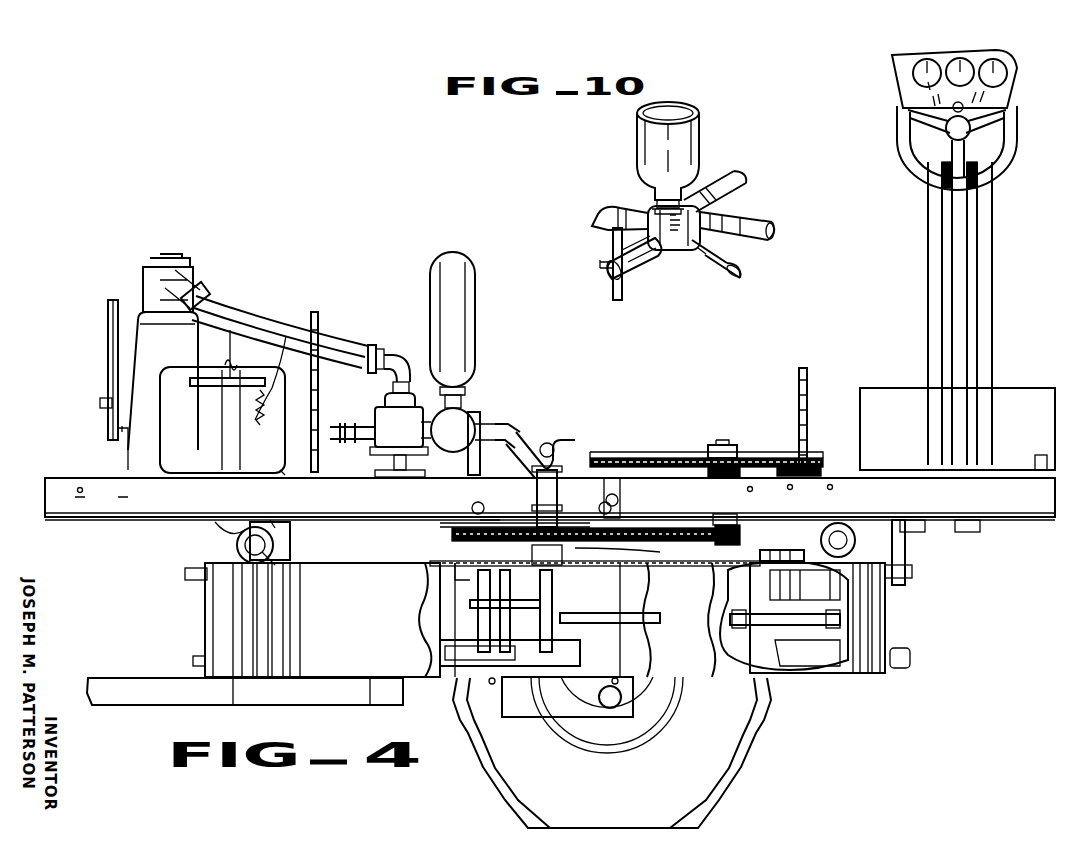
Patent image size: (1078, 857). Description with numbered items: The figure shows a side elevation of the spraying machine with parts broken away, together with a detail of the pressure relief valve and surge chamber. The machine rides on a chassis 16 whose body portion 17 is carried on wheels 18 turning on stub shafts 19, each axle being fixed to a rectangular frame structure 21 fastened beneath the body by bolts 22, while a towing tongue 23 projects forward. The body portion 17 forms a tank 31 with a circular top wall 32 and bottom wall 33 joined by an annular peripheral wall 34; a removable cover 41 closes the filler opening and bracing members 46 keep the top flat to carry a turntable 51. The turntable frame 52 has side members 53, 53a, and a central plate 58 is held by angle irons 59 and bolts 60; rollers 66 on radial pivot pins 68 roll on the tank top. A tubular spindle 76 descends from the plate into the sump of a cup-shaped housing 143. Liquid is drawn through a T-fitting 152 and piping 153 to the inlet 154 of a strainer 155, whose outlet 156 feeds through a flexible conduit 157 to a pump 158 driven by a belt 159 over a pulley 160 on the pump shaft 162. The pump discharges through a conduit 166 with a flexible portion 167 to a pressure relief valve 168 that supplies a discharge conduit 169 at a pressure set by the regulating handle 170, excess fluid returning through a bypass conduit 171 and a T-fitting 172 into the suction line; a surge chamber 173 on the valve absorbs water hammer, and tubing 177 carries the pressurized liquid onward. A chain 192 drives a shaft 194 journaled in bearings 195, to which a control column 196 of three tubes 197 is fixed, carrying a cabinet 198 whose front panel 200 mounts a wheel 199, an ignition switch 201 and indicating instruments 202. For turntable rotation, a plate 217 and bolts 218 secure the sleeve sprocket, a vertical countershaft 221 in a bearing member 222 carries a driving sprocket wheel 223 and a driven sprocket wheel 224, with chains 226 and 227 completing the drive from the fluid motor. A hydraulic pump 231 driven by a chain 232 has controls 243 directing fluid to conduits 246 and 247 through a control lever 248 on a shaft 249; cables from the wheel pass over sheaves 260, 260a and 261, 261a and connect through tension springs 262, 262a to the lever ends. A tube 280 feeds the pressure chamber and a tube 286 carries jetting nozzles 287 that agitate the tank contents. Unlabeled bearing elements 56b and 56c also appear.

In FIG. 4, the chassis 16 is at (782, 685).
In FIG. 4, the body portion 17 is at (875, 637).
In FIG. 4, the wheels 18 is at (712, 784).
In FIG. 4, the stub shafts or axles 19 is at (618, 702).
In FIG. 4, the rectangular frame structure 21 is at (600, 702).
In FIG. 4, the bolts 22 is at (620, 684).
In FIG. 4, the towing tongue 23 is at (112, 690).
In FIG. 4, the tank 31 is at (362, 627).
In FIG. 4, the top wall 32 is at (450, 570).
In FIG. 4, the bottom wall 33 is at (440, 640).
In FIG. 4, the annular peripheral wall 34 is at (228, 642).
In FIG. 4, the removable cover 41 is at (772, 556).
In FIG. 4, the bracing members 46 is at (485, 620).
In FIG. 4, the turntable 51 is at (42, 478).
In FIG. 4, the turntable frame 52 is at (118, 532).
In FIG. 4, the side member 53 is at (380, 497).
In FIG. 4, the side member 53a is at (101, 495).
In FIG. 4, the bearing 56b is at (476, 496).
In FIG. 4, the bearing 56c is at (622, 492).
In FIG. 4, the plate 58 is at (524, 515).
In FIG. 4, the angle irons 59 is at (600, 510).
In FIG. 4, the bolts 60 is at (480, 540).
In FIG. 4, the rollers 66 is at (250, 555).
In FIG. 4, the pivot pins 68 is at (275, 555).
In FIG. 4, the tubular spindle 76 is at (550, 592).
In FIG. 4, the cup-shaped housing 143 is at (575, 657).
In FIG. 4, the T-fitting 152 is at (560, 450).
In FIG. 10, the piping 153 is at (742, 224).
In FIG. 4, the piping 153 is at (518, 426).
In FIG. 4, the strainer inlet 154 is at (462, 398).
In FIG. 4, the strainer 155 is at (399, 435).
In FIG. 4, the strainer outlet 156 is at (388, 396).
In FIG. 4, the flexible conduit 157 is at (345, 352).
In FIG. 4, the pump 158 is at (150, 336).
In FIG. 4, the belt 159 is at (108, 344).
In FIG. 4, the pulley 160 is at (118, 430).
In FIG. 4, the pump shaft 162 is at (100, 404).
In FIG. 10, the conduit 166 is at (722, 267).
In FIG. 4, the conduit 166 is at (220, 298).
In FIG. 4, the flexible portion 167 is at (224, 313).
In FIG. 10, the pressure relief valve 168 is at (669, 259).
In FIG. 4, the pressure relief valve 168 is at (466, 410).
In FIG. 10, the discharge conduit 169 is at (618, 222).
In FIG. 4, the discharge conduit 169 is at (524, 438).
In FIG. 10, the regulating handle 170 is at (613, 282).
In FIG. 10, the bypass conduit 171 is at (712, 196).
In FIG. 10, the T-fitting 172 is at (690, 190).
In FIG. 4, the T-fitting 172 is at (453, 444).
In FIG. 10, the surge chamber 173 is at (699, 120).
In FIG. 4, the surge chamber 173 is at (458, 330).
In FIG. 4, the tubing 177 is at (630, 460).
In FIG. 4, the chain 192 is at (807, 384).
In FIG. 4, the shaft 194 is at (905, 462).
In FIG. 4, the bearings 195 is at (1044, 460).
In FIG. 10, the control column 196 is at (920, 216).
In FIG. 10, the tubes 197 is at (988, 241).
In FIG. 10, the cabinet 198 is at (902, 84).
In FIG. 10, the wheel 199 is at (897, 148).
In FIG. 10, the front panel 200 is at (928, 102).
In FIG. 10, the ignition switch 201 is at (965, 107).
In FIG. 10, the indicating instruments 202 is at (910, 72).
In FIG. 4, the plate 217 is at (460, 568).
In FIG. 4, the bolts 218 is at (525, 570).
In FIG. 4, the vertical countershaft 221 is at (715, 557).
In FIG. 4, the bearing member 222 is at (721, 499).
In FIG. 4, the driving sprocket wheel 223 is at (722, 522).
In FIG. 4, the driven sprocket wheel 224 is at (710, 447).
In FIG. 4, the chain 226 is at (610, 540).
In FIG. 4, the chain 227 is at (752, 463).
In FIG. 4, the hydraulic pump 231 is at (172, 454).
In FIG. 4, the chain 232 is at (318, 322).
In FIG. 4, the controls 243 is at (210, 378).
In FIG. 4, the conduit 246 is at (350, 422).
In FIG. 4, the conduit 247 is at (276, 499).
In FIG. 4, the control lever 248 is at (190, 382).
In FIG. 4, the control valve shaft 249 is at (230, 410).
In FIG. 4, the sheave 260 is at (915, 522).
In FIG. 4, the sheave 260a is at (980, 522).
In FIG. 4, the sheave 261 is at (285, 524).
In FIG. 4, the sheave 261a is at (236, 506).
In FIG. 4, the tension spring 262 is at (290, 326).
In FIG. 4, the tension spring 262a is at (225, 398).
In FIG. 4, the tube 280 is at (568, 435).
In FIG. 4, the tube 286 is at (717, 627).
In FIG. 4, the jetting nozzles 287 is at (822, 615).